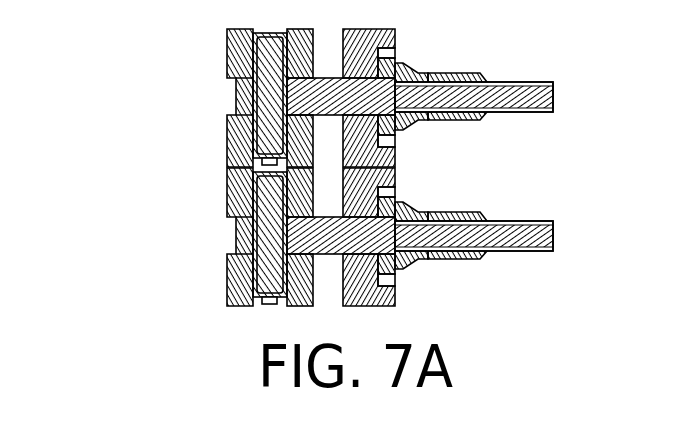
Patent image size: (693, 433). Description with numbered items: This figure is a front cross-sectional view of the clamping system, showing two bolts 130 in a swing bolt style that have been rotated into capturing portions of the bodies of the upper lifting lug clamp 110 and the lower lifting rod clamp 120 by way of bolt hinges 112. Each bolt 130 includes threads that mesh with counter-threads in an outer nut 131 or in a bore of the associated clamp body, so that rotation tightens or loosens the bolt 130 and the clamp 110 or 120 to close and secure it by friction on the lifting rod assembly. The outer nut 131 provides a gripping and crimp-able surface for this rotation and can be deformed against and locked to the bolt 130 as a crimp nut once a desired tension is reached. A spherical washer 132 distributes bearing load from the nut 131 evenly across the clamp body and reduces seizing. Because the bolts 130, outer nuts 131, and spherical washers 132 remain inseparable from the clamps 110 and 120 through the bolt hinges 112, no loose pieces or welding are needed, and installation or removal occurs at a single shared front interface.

The upper lifting lug clamp 110 is at (227, 138).
The lower lifting rod clamp 120 is at (227, 201).
The bolt hinge 112 is at (227, 60).
The bolt 130 is at (552, 96).
The outer nut 131 is at (430, 71).
The spherical washer 132 is at (399, 66).